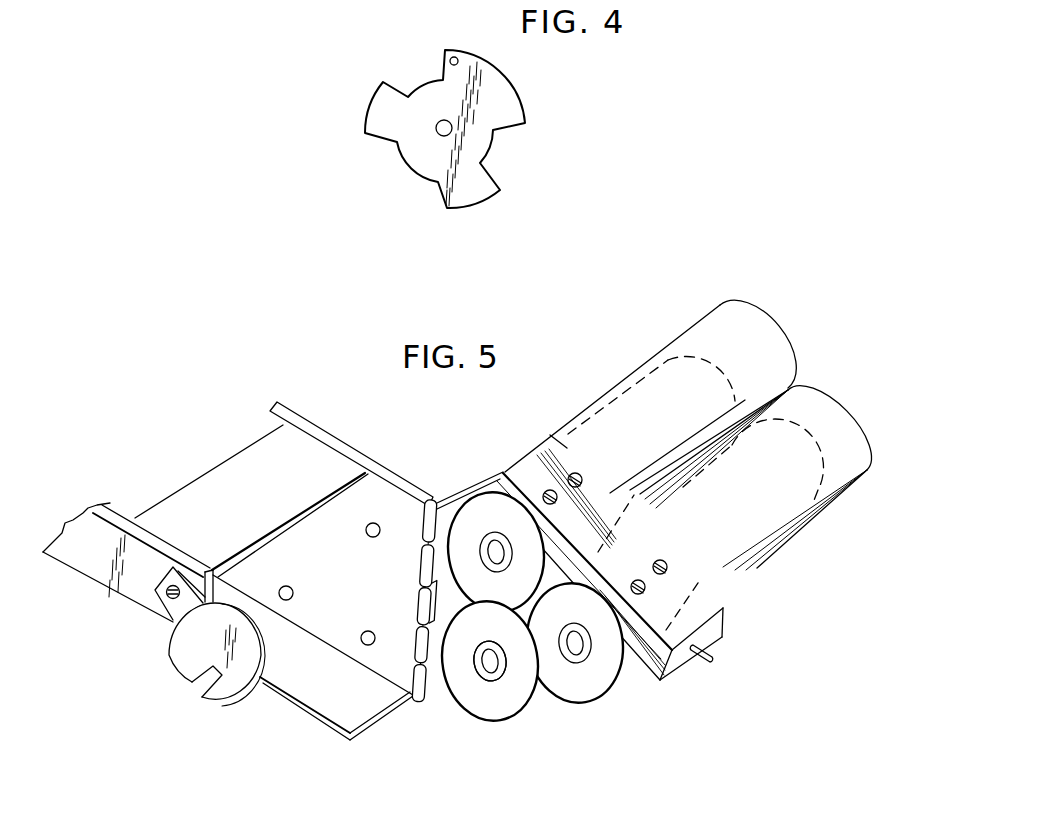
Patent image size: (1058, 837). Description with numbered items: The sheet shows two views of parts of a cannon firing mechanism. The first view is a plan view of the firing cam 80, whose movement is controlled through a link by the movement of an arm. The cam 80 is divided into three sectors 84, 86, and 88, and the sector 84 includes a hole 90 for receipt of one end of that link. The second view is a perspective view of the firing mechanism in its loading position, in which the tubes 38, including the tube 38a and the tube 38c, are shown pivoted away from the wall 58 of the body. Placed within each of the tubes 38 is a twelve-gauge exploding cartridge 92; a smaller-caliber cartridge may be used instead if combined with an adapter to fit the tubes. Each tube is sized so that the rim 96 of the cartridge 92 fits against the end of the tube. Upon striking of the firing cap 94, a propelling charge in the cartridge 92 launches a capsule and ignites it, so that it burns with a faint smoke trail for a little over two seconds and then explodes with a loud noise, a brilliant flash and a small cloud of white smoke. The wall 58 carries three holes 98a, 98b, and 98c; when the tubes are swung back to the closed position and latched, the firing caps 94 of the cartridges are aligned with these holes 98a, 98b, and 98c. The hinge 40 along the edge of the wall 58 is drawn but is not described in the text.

In FIG. 4, the cam 80 is at (433, 133).
In FIG. 4, the sector 84 is at (503, 95).
In FIG. 4, the sector 86 is at (382, 108).
In FIG. 4, the sector 88 is at (473, 188).
In FIG. 4, the hole 90 is at (455, 56).
In FIG. 5, the wall 58 is at (372, 497).
In FIG. 5, the hole 98a is at (382, 518).
In FIG. 5, the hole 98b is at (363, 631).
In FIG. 5, the hole 98c is at (286, 586).
In FIG. 5, the hinge 40 is at (413, 703).
In FIG. 5, the tubes 38 is at (545, 700).
In FIG. 5, the tube 38a is at (745, 330).
In FIG. 5, the tube 38c is at (833, 433).
In FIG. 5, the cartridge 92 is at (473, 510).
In FIG. 5, the firing cap 94 is at (488, 667).
In FIG. 5, the rim 96 is at (577, 703).